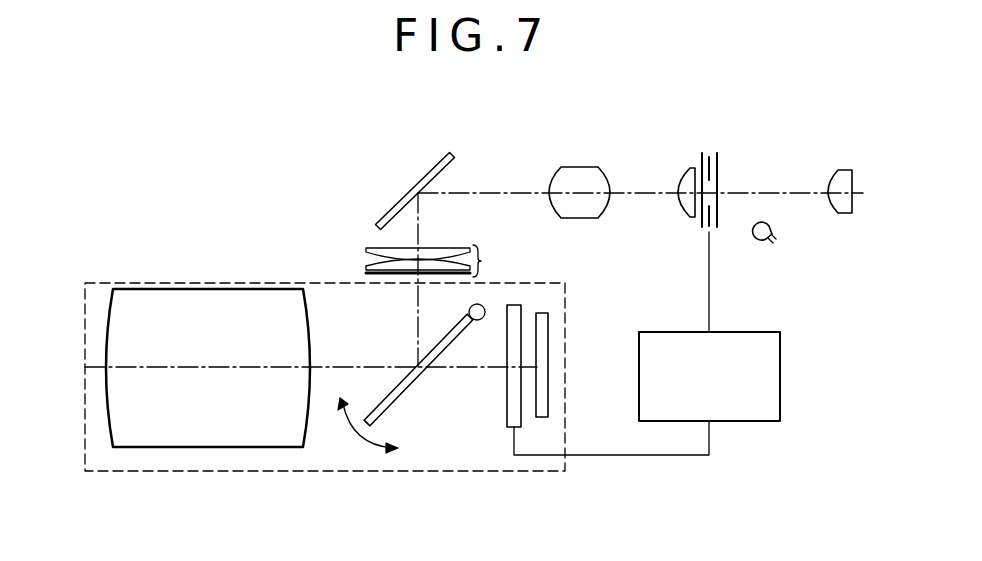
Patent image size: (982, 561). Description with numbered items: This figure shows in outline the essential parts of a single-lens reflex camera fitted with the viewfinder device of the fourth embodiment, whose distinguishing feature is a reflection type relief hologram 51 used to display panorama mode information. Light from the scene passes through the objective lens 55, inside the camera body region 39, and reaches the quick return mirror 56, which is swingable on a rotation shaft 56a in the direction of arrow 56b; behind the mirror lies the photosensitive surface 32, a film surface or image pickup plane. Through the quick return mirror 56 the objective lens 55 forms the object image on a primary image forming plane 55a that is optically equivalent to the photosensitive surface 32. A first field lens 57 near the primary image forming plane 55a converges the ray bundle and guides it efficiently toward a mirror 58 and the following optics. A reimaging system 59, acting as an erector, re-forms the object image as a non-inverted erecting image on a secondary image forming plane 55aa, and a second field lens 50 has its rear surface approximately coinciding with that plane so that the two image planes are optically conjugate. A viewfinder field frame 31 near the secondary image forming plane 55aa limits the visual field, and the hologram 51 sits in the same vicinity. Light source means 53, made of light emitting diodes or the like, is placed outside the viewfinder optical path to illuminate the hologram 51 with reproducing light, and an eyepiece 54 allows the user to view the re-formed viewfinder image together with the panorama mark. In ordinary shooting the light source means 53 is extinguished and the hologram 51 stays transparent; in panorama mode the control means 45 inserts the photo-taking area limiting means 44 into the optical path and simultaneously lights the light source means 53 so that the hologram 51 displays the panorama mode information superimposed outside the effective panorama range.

The lens unit (dashed enclosure) 39 is at (118, 283).
The objective lens 55 is at (190, 289).
The primary image forming plane 55a is at (366, 273).
The secondary image forming plane 55aa is at (702, 153).
The first field lens 57 is at (439, 261).
The mirror 58 is at (403, 193).
The quick return mirror 56 is at (392, 408).
The rotation shaft 56a is at (478, 304).
The arrow 56b is at (360, 437).
The photosensitive surface 32 is at (548, 347).
The photo-taking area limiting means 44 is at (522, 407).
The control means 45 is at (770, 332).
The reimaging system 59 is at (580, 167).
The second field lens 50 is at (690, 168).
The reflection type relief hologram 51 is at (717, 155).
The viewfinder field frame 31 is at (710, 224).
The eyepiece 54 is at (847, 170).
The light source means 53 is at (772, 233).